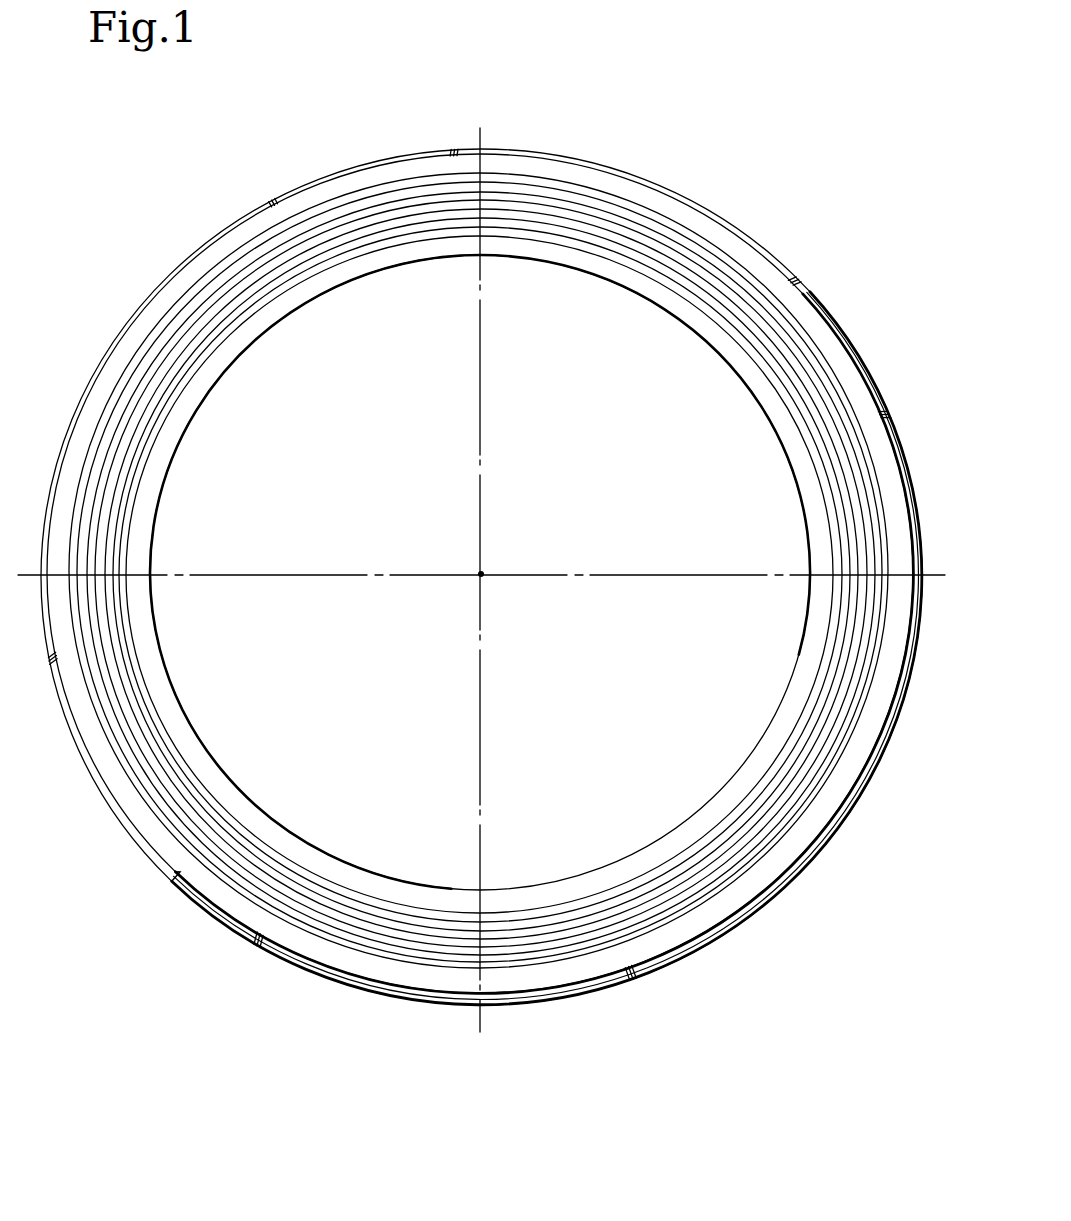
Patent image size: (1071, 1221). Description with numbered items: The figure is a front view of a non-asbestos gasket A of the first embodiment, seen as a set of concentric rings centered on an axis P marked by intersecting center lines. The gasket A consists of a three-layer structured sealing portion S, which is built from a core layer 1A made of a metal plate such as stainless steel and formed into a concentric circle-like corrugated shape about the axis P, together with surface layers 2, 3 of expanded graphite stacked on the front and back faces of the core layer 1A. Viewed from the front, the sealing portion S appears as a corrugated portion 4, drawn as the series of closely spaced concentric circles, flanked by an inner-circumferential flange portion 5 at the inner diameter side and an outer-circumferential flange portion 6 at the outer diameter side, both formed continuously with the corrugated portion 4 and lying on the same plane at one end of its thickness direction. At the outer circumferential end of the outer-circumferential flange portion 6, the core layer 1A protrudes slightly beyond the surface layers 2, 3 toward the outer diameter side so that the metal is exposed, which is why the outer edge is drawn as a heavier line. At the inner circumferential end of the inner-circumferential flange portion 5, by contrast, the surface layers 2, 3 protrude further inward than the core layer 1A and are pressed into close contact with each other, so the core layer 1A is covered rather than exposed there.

The non-asbestos gasket A is at (481, 574).
The sealing portion S is at (258, 266).
The axis P is at (482, 573).
The inner-circumferential flange portion 5 is at (750, 767).
The corrugated portion 4 is at (322, 915).
The surface layer 2 is at (481, 577).
The surface layer 3 is at (800, 292).
The core layer 1A is at (698, 942).
The outer-circumferential flange portion 6 is at (182, 880).